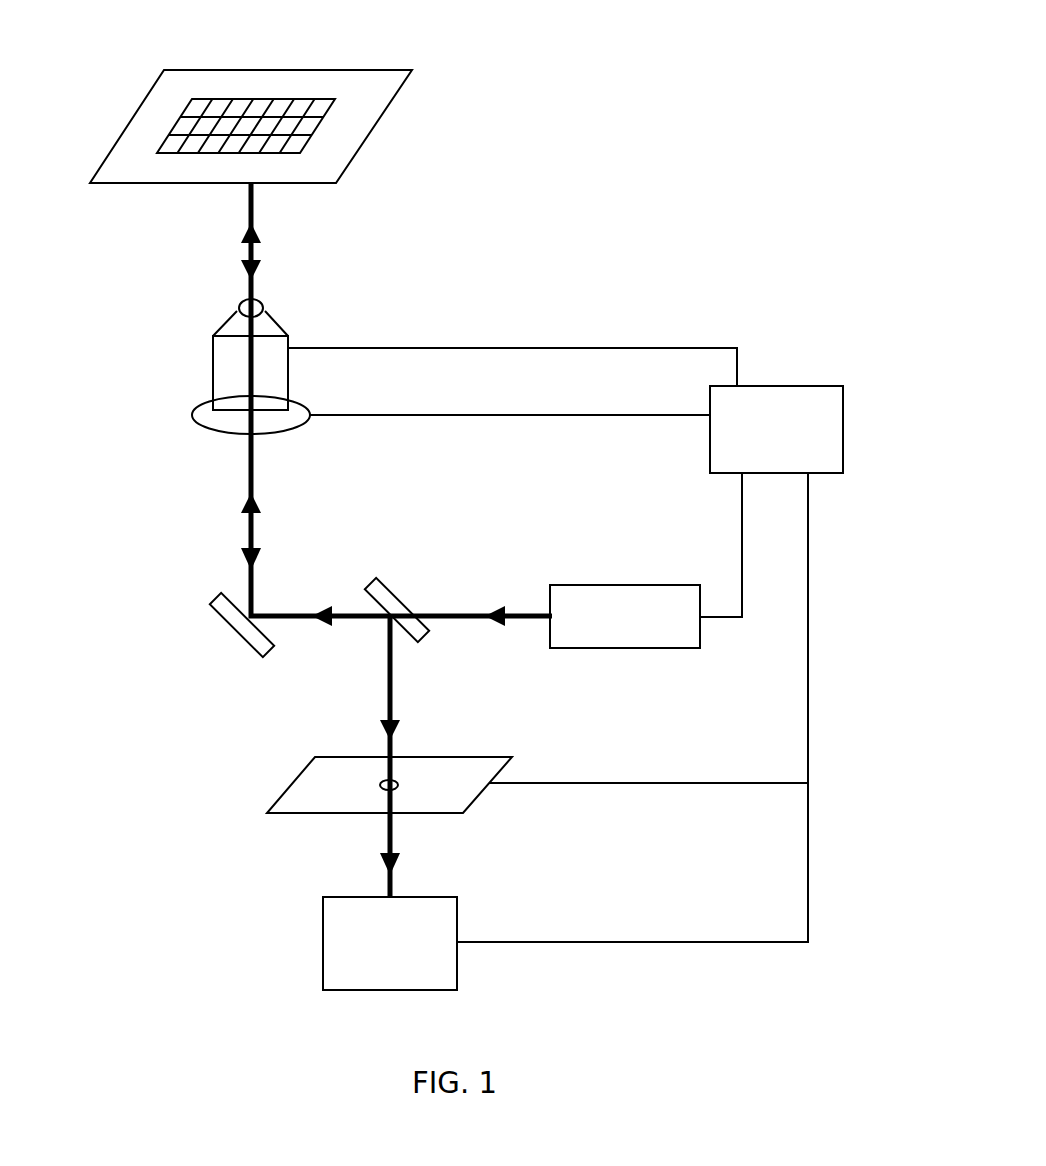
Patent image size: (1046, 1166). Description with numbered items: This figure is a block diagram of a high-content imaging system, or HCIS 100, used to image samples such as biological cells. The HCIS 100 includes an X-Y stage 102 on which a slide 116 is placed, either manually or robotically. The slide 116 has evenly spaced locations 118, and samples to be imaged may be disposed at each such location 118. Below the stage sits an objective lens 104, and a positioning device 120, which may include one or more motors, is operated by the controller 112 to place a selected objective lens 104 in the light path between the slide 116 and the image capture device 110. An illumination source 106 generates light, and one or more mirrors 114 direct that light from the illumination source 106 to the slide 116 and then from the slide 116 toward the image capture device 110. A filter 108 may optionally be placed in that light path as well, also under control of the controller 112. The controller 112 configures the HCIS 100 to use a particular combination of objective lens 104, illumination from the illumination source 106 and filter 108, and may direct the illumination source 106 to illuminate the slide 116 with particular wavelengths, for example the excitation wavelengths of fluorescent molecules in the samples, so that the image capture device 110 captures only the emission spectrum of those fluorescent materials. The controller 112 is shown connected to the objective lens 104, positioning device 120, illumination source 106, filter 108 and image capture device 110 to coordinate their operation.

The high-content imaging system 100 is at (708, 140).
The X-Y stage 102 is at (373, 128).
The objective lens 104 is at (230, 349).
The illumination source 106 is at (598, 588).
The filter 108 is at (458, 757).
The image capture device 110 is at (323, 935).
The controller 112 is at (845, 407).
The mirror 114 is at (380, 588).
The slide 116 is at (303, 155).
The location 118 is at (288, 110).
The positioning device 120 is at (205, 410).